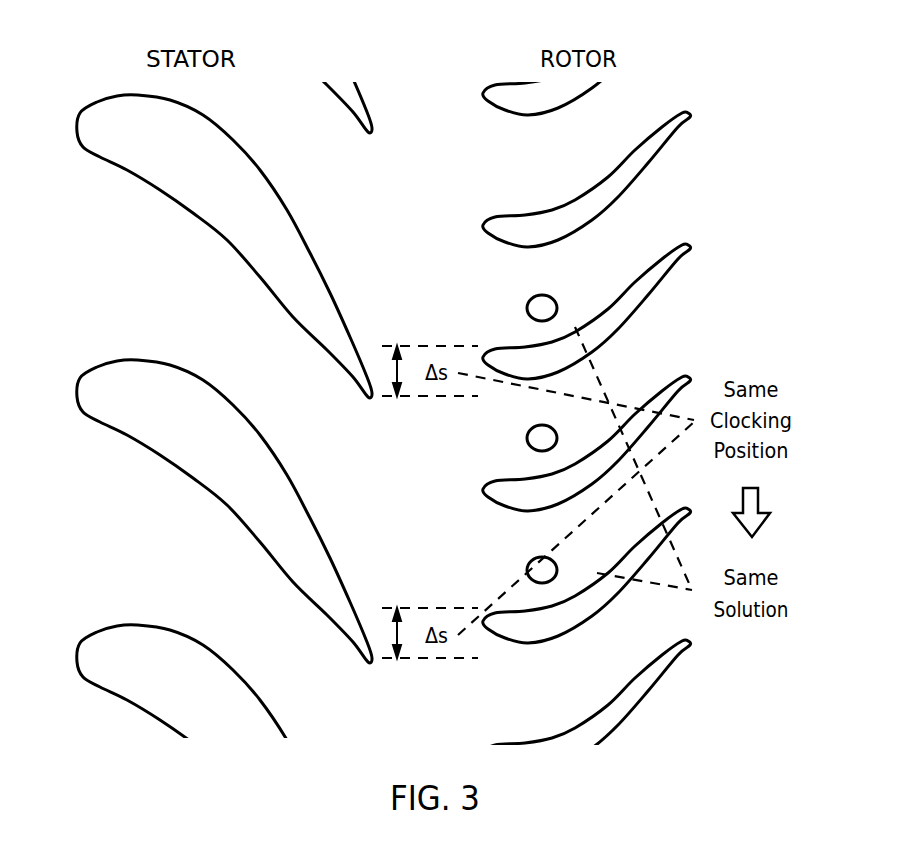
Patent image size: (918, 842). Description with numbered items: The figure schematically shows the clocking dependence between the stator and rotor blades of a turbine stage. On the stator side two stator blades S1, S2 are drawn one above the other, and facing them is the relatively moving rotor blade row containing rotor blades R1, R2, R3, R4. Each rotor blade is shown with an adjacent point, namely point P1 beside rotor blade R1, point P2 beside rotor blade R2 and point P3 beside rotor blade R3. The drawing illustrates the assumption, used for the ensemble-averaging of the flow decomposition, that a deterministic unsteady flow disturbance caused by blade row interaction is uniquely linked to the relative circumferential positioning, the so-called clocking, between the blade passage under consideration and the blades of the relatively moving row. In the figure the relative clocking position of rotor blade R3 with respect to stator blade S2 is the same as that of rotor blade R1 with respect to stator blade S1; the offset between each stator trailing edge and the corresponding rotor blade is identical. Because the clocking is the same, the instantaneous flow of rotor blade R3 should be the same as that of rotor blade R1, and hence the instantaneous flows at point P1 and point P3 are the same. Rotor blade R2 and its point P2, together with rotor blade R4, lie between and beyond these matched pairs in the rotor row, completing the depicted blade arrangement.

The stator blade S1 is at (224, 511).
The stator blade S2 is at (224, 246).
The rotor blade R1 is at (587, 575).
The rotor blade R2 is at (587, 443).
The rotor blade R3 is at (587, 311).
The rotor blade R4 is at (587, 179).
The point P1 is at (558, 571).
The point P2 is at (558, 439).
The point P3 is at (558, 308).